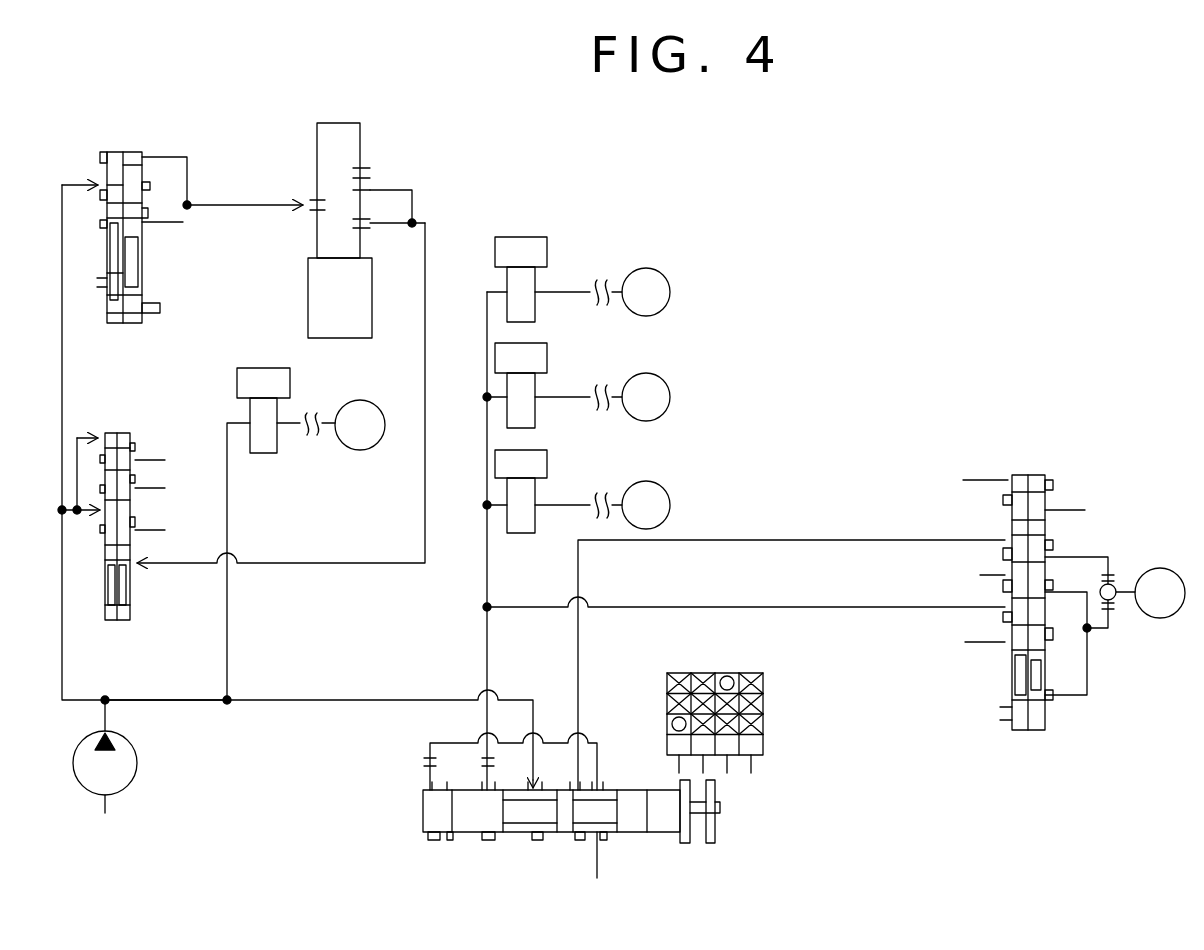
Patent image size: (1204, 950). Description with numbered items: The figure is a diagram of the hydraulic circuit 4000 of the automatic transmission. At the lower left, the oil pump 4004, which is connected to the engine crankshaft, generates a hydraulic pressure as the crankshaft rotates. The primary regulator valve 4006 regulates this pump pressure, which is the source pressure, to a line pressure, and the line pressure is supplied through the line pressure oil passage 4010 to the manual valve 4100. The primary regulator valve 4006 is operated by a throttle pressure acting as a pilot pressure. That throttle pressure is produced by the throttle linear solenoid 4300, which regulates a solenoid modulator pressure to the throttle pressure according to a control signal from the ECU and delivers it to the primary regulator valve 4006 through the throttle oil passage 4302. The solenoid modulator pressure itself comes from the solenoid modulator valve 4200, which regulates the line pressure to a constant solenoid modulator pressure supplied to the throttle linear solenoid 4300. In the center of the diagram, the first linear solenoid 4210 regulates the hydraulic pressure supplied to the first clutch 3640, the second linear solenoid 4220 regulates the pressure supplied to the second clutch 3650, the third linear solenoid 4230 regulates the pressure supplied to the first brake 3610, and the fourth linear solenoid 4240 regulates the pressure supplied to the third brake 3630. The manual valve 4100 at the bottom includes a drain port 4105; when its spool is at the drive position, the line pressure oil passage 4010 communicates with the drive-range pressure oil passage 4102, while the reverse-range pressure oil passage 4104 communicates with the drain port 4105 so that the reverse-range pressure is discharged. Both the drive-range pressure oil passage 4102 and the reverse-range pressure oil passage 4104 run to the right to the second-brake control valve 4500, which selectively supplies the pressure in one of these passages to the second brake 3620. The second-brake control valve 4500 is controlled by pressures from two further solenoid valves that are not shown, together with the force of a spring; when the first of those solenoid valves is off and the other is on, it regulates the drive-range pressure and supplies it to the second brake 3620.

The hydraulic circuit 4000 is at (684, 167).
The solenoid modulator valve 4200 is at (120, 337).
The SLT linear solenoid 4300 is at (308, 278).
The SLT oil passage 4302 is at (377, 563).
The SL4 linear solenoid 4240 is at (262, 368).
The B3 brake 3630 is at (358, 400).
The SL1 linear solenoid 4210 is at (590, 262).
The SL2 linear solenoid 4220 is at (590, 368).
The SL3 linear solenoid 4230 is at (590, 475).
The C1 clutch 3640 is at (655, 267).
The C2 clutch 3650 is at (655, 372).
The B1 brake 3610 is at (655, 480).
The primary regulator valve 4006 is at (112, 622).
The line pressure oil passage 4010 is at (140, 700).
The oil pump 4004 is at (145, 752).
The D-range pressure oil passage 4102 is at (880, 607).
The R-range pressure oil passage 4104 is at (880, 541).
The manual valve 4100 is at (411, 823).
The drain port 4105 is at (607, 848).
The B2 control valve 4500 is at (1064, 482).
The B2 brake 3620 is at (1150, 620).